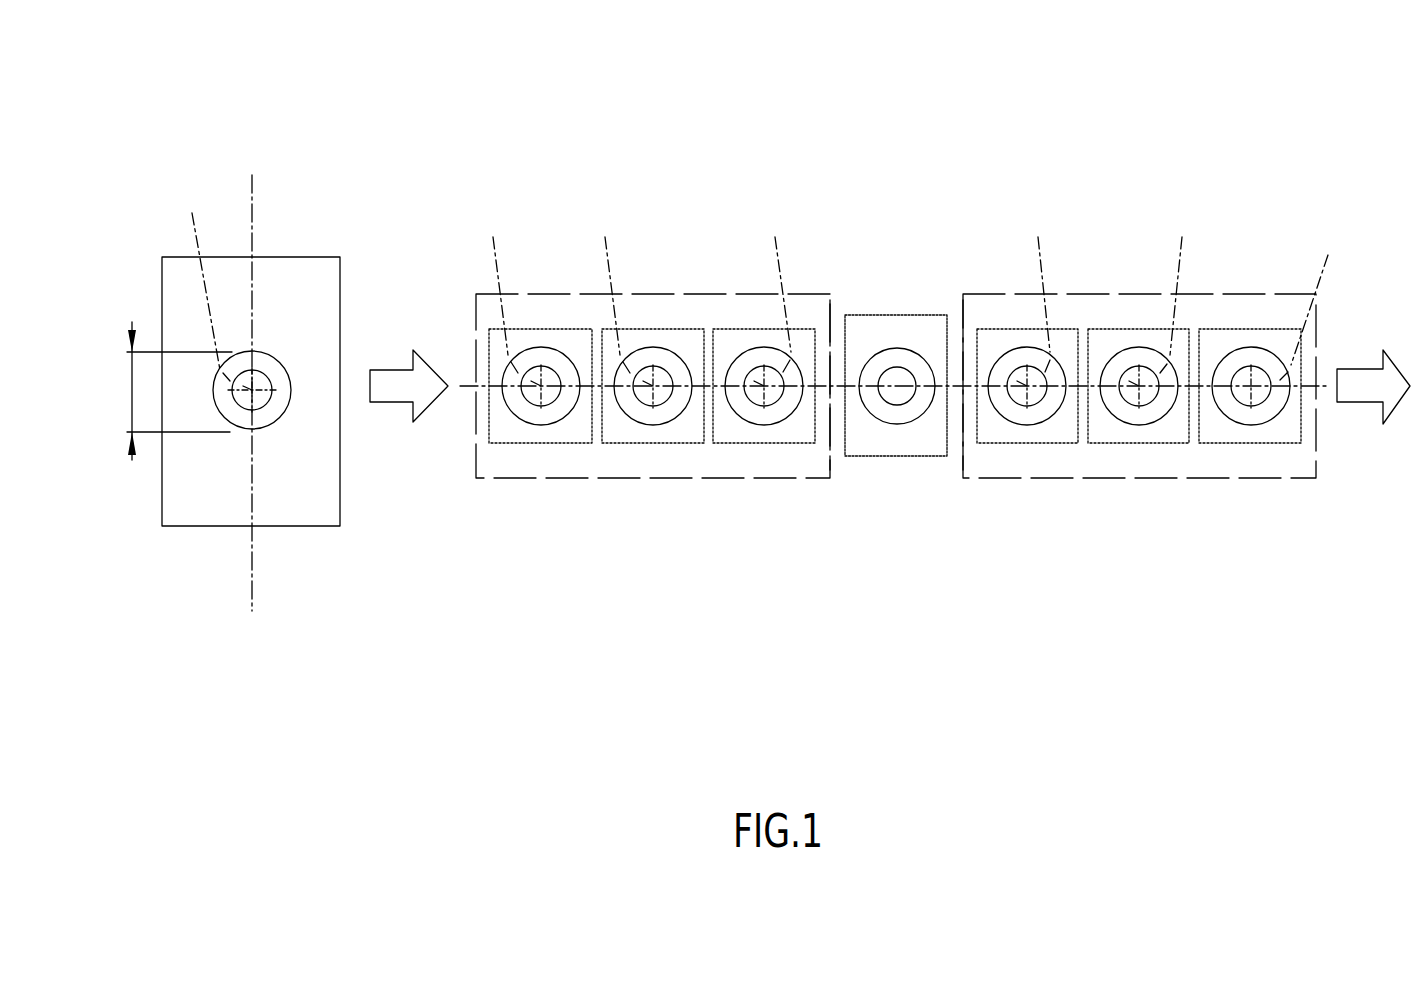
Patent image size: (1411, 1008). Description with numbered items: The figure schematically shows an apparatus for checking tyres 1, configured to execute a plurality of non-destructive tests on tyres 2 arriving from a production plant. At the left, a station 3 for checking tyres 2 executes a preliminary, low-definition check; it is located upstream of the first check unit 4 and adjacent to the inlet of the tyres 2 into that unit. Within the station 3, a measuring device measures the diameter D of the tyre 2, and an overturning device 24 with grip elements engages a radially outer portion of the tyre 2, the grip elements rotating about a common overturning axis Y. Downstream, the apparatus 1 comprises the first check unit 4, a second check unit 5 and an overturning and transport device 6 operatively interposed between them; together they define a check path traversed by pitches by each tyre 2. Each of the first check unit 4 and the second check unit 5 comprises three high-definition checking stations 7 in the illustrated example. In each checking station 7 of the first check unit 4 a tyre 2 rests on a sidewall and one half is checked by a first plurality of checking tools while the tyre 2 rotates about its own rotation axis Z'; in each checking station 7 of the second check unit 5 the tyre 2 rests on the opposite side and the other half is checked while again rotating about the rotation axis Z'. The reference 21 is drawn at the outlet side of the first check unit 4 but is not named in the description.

The apparatus for checking tyres 1 is at (1279, 142).
The tyre 2 is at (263, 431).
The station for checking tyres 3 is at (290, 253).
The first check unit 4 is at (661, 284).
The second check unit 5 is at (1132, 288).
The overturning and transport device 6 is at (922, 462).
The high-definition checking station 7 is at (562, 443).
The outlet of first module 21 is at (830, 316).
The overturning device 24 is at (963, 316).
The diameter D is at (132, 378).
The overturning axis Y is at (248, 565).
The rotation axis Z' is at (763, 282).